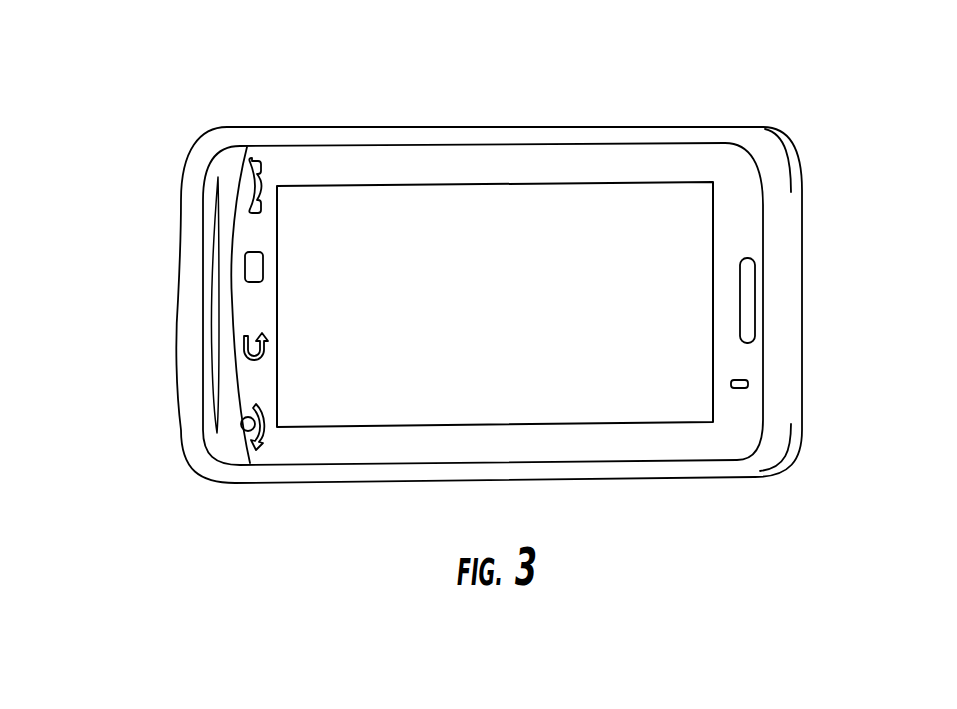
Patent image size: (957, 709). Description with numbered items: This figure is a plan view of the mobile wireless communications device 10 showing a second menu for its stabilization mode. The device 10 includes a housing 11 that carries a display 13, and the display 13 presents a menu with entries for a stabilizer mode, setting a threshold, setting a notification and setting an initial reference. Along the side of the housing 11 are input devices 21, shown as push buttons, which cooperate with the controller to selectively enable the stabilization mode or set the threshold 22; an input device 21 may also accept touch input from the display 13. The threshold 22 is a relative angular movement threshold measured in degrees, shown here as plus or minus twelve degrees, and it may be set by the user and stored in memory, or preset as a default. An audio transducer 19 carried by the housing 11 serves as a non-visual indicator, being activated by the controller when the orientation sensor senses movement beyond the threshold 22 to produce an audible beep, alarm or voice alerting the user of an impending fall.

The mobile wireless communications device 10 is at (206, 87).
The housing 11 is at (343, 127).
The display 13 is at (553, 227).
The audio transducer 19 is at (755, 287).
The input devices 21 is at (243, 425).
The threshold 22 is at (700, 200).